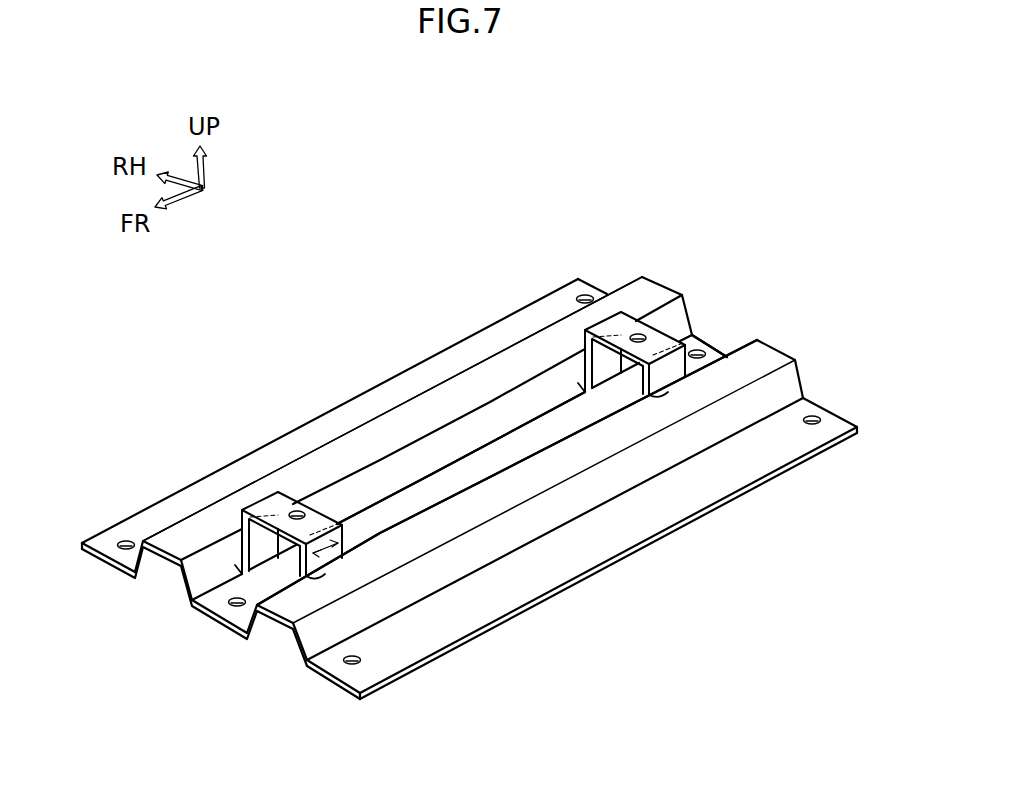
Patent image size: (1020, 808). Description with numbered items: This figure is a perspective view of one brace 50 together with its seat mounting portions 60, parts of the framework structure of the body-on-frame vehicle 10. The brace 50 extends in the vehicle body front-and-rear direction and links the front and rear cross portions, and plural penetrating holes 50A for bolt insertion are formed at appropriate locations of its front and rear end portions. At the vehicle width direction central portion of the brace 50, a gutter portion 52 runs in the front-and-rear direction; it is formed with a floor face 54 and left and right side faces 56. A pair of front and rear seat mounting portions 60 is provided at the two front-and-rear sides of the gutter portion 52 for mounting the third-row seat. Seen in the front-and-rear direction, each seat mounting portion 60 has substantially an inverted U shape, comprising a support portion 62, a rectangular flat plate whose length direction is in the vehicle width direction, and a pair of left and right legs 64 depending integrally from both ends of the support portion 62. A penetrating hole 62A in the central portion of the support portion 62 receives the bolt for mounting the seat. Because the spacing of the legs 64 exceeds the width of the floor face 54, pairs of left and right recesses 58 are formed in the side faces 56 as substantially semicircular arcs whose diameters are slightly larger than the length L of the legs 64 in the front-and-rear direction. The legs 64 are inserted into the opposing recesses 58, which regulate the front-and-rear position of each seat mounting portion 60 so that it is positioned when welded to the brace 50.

The vehicle lower structure 10 is at (555, 616).
The brace 50 is at (416, 350).
The penetrating hole 50A is at (585, 298).
The gutter portion 52 is at (706, 342).
The floor face 54 is at (500, 458).
The side face 56 is at (376, 480).
The recess 58 is at (582, 353).
The seat mounting portion 60 is at (624, 306).
The support portion 62 is at (663, 343).
The penetrating hole 62A is at (639, 333).
The leg 64 is at (586, 356).
The length (width) of the legs L is at (335, 568).